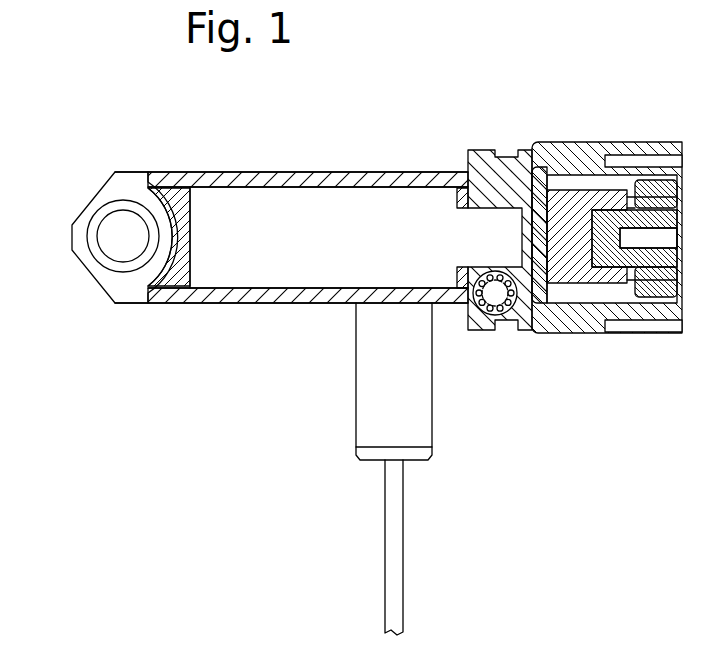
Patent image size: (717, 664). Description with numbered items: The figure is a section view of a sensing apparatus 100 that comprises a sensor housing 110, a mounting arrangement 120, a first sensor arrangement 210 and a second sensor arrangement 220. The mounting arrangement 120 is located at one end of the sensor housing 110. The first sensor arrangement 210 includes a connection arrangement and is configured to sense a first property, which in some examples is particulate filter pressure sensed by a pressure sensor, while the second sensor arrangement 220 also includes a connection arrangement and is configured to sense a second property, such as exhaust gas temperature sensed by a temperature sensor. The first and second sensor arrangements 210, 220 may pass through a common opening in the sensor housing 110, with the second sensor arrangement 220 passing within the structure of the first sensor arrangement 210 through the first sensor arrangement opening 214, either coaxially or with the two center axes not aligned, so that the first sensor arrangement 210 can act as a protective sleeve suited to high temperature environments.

The sensing apparatus 100 is at (235, 156).
The sensor housing 110 is at (392, 156).
The mounting arrangement 120 is at (90, 288).
The first sensor arrangement 210 is at (412, 380).
The first sensor arrangement opening 214 is at (422, 462).
The second sensor arrangement 220 is at (390, 560).